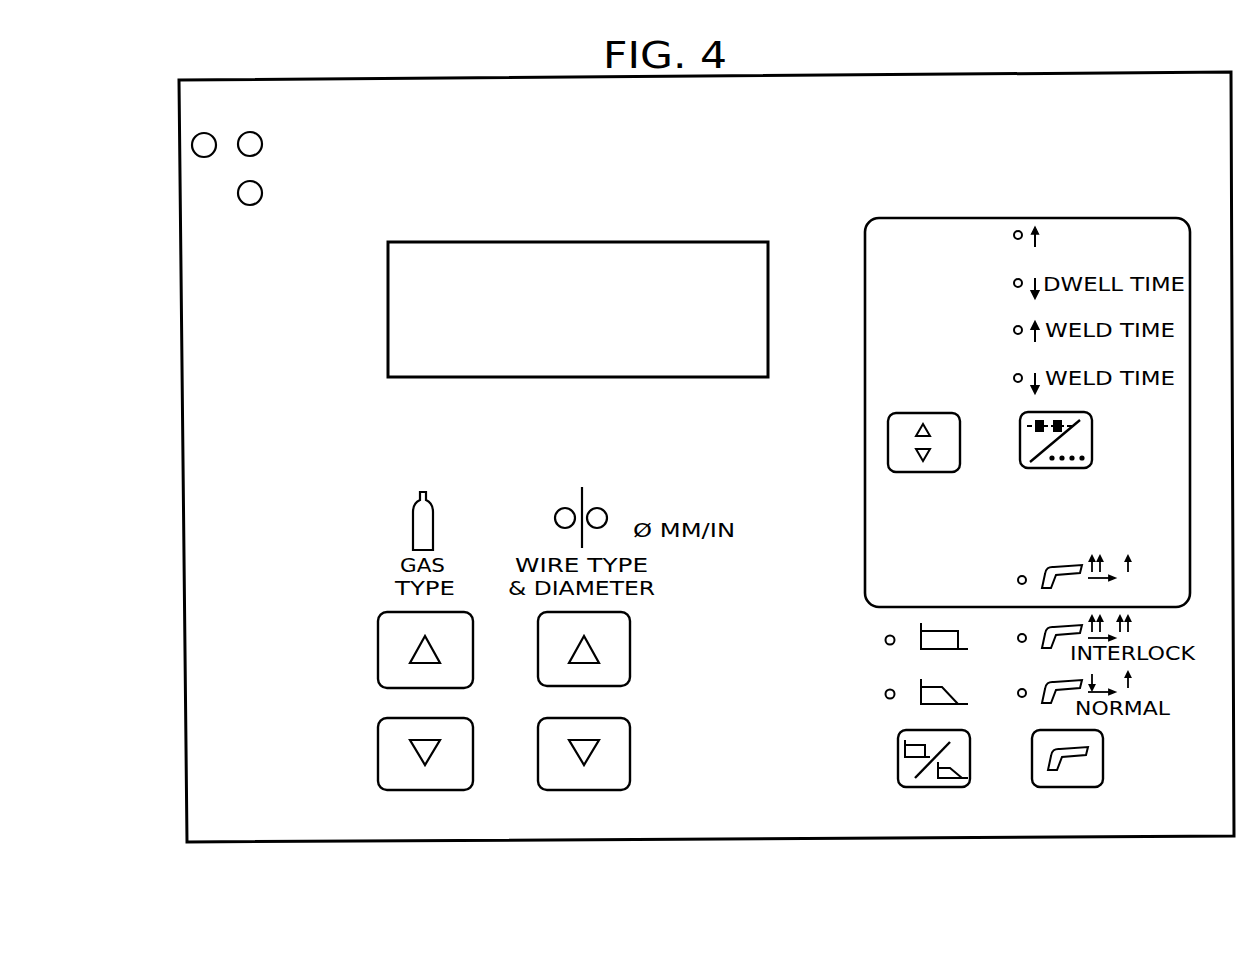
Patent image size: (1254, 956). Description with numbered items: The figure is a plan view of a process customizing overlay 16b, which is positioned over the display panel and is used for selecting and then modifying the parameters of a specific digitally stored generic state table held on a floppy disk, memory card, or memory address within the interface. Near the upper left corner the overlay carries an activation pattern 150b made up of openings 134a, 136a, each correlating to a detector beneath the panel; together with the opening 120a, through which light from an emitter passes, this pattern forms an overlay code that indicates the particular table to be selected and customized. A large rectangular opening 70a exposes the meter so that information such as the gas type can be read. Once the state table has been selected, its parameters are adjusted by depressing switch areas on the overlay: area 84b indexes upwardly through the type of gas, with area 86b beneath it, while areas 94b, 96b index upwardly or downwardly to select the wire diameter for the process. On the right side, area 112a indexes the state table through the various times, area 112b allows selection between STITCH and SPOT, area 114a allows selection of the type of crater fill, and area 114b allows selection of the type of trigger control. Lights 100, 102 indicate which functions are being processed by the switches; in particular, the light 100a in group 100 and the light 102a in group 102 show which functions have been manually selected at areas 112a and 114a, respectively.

The overlay 16b is at (1085, 72).
The activation pattern 150b is at (272, 108).
The opening 134a is at (205, 147).
The opening 120a is at (253, 143).
The opening 136a is at (250, 195).
The opening 70a is at (713, 255).
The area 84b is at (378, 652).
The area 86b is at (378, 745).
The area 94b is at (630, 648).
The area 96b is at (630, 760).
The lights 100 is at (1012, 215).
The light 100a is at (1012, 236).
The area 112a is at (911, 413).
The area 112b is at (1092, 435).
The light 102a is at (1018, 578).
The lights 102 is at (885, 650).
The area 114a is at (898, 748).
The area 114b is at (1103, 755).